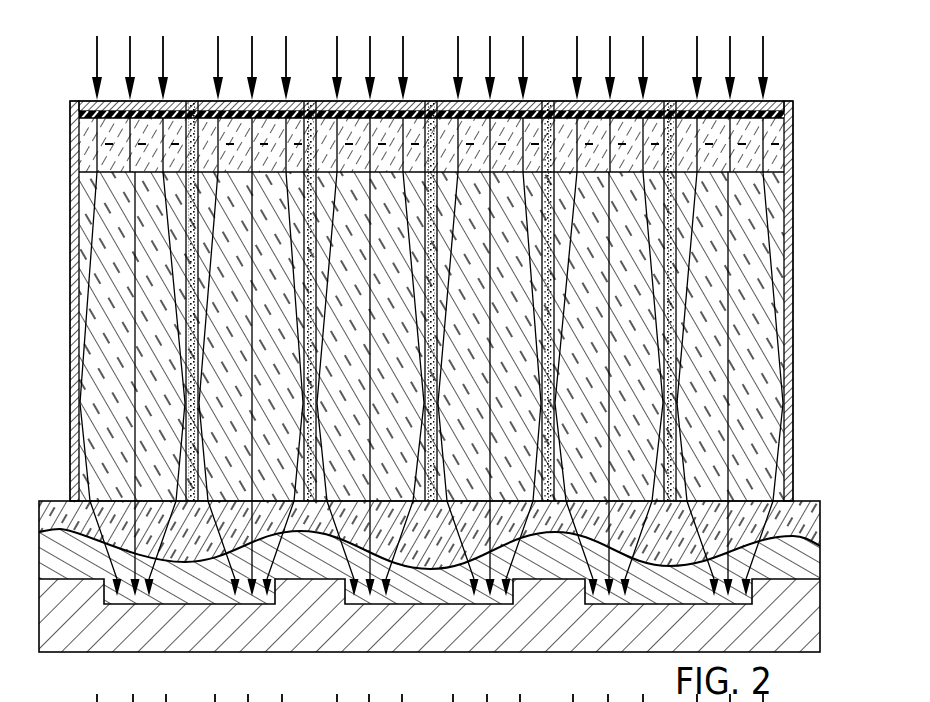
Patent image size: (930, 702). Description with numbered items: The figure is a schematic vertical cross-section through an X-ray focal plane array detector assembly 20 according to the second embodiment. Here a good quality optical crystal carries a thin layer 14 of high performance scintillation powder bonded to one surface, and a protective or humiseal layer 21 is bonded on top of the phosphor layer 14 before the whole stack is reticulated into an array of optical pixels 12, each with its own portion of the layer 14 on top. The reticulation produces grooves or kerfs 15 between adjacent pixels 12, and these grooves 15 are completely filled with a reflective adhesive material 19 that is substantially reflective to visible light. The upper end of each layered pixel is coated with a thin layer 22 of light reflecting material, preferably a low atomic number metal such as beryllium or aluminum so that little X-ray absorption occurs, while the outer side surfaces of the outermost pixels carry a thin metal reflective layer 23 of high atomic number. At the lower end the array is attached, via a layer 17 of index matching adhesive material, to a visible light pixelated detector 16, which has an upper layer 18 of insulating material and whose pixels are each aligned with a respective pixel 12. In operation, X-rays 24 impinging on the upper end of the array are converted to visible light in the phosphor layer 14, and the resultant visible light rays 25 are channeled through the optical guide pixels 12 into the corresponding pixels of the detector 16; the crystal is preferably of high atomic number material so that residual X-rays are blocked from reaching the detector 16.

The optical pixels 12 is at (220, 347).
The layer of scintillation powder 14 is at (103, 133).
The grooves 15 is at (310, 101).
The visible light pixelated detector 16 is at (795, 611).
The layer of index matching adhesive material 17 is at (800, 524).
The upper layer of insulating material 18 is at (800, 557).
The reflective adhesive material 19 is at (185, 403).
The X-ray focal plane array detector assembly 20 is at (797, 374).
The protective or humiseal layer 21 is at (794, 110).
The thin layer of light reflecting material 22 is at (90, 101).
The thin metal reflective layer 23 is at (75, 205).
The X-rays 24 is at (218, 57).
The visible light rays 25 is at (135, 262).